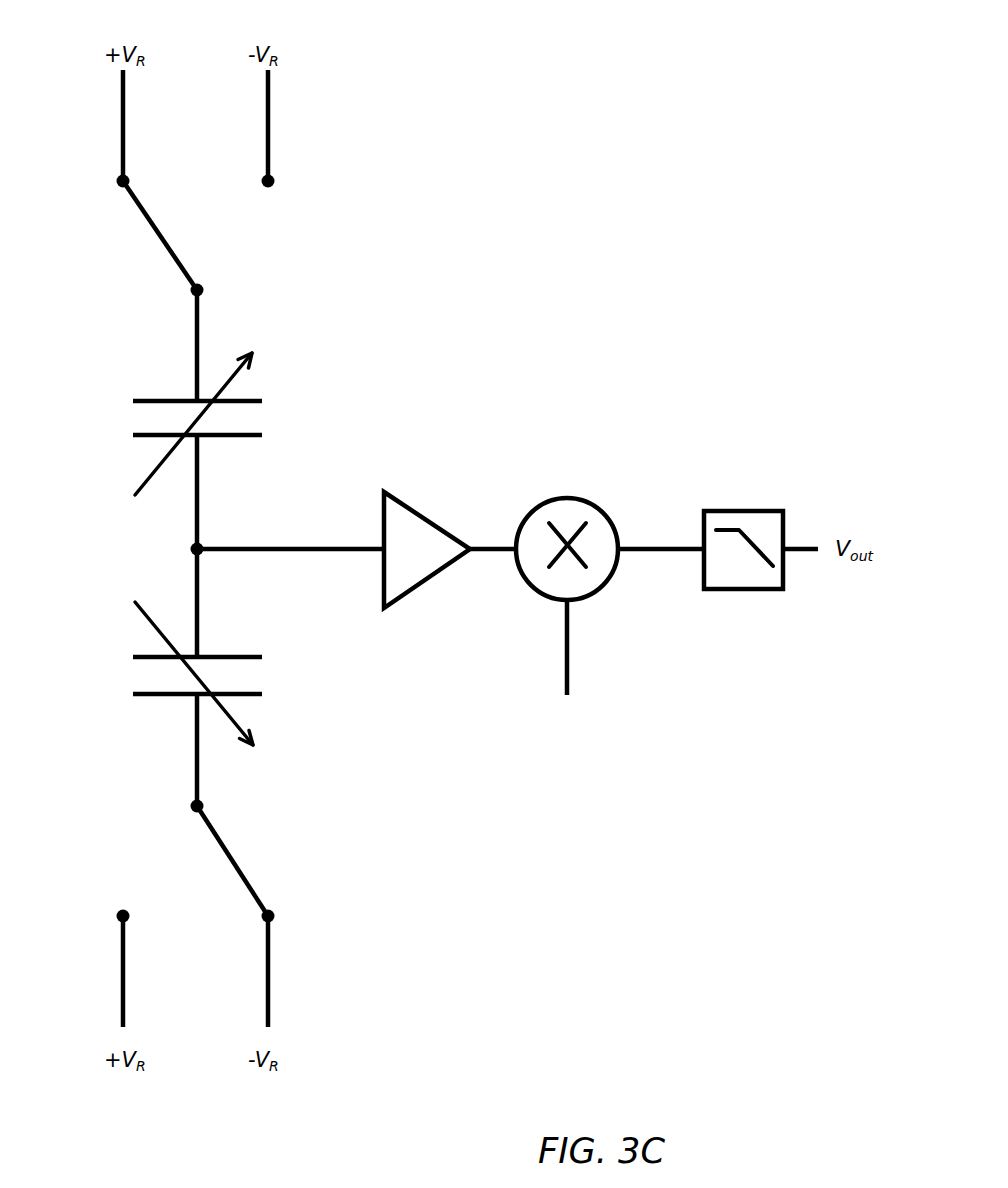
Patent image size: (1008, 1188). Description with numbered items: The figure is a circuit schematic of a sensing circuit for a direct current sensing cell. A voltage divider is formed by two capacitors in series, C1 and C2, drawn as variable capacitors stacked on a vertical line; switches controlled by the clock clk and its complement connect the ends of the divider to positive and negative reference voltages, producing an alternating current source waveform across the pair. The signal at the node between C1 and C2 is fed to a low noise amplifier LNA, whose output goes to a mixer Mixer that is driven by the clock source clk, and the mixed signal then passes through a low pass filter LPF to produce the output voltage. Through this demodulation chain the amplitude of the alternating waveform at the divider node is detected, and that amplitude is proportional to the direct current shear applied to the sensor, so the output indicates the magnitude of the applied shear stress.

The first capacitor C1 is at (174, 424).
The second capacitor C2 is at (174, 673).
The low noise amplifier LNA is at (450, 550).
The mixer Mixer is at (610, 536).
The low pass filter LPF is at (761, 534).
The clock source clk is at (168, 254).